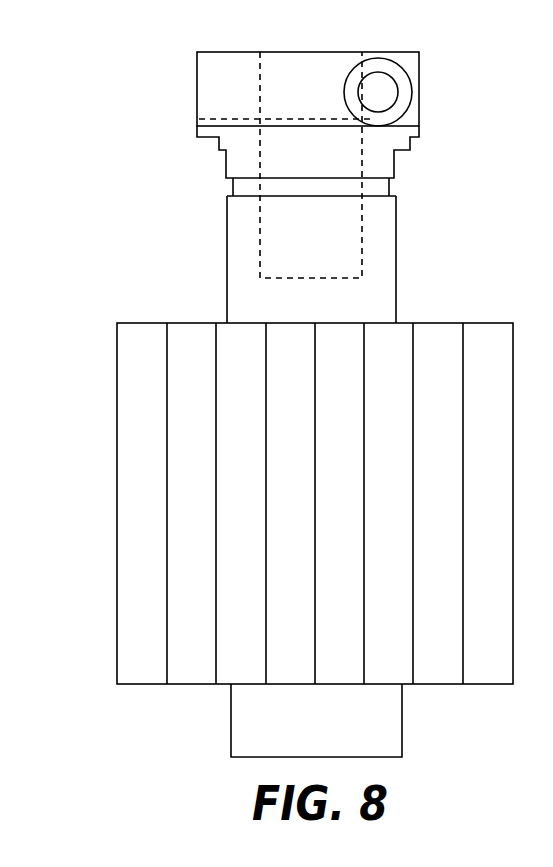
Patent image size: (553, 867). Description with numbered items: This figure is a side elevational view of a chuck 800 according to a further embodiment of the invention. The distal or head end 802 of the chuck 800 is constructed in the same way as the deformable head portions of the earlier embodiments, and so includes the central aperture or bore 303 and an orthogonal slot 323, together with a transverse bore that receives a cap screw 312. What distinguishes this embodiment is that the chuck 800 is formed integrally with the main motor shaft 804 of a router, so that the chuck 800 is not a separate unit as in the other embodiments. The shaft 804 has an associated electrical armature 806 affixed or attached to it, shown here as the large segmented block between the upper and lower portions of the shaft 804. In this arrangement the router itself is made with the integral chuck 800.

The chuck 800 is at (298, 38).
The head end 802 is at (227, 67).
The orthogonal slot 323 is at (228, 118).
The cap screw 312 is at (403, 121).
The central aperture or bore 303 is at (380, 213).
The main motor shaft 804 is at (385, 277).
The electrical armature 806 is at (135, 479).